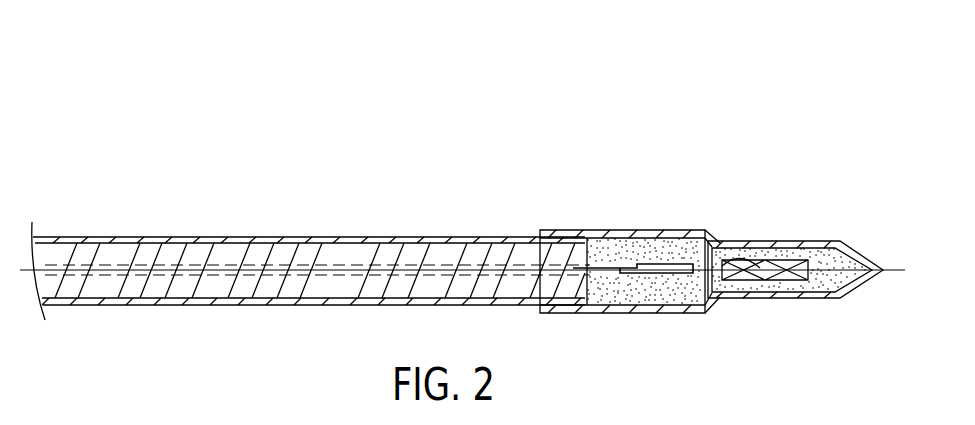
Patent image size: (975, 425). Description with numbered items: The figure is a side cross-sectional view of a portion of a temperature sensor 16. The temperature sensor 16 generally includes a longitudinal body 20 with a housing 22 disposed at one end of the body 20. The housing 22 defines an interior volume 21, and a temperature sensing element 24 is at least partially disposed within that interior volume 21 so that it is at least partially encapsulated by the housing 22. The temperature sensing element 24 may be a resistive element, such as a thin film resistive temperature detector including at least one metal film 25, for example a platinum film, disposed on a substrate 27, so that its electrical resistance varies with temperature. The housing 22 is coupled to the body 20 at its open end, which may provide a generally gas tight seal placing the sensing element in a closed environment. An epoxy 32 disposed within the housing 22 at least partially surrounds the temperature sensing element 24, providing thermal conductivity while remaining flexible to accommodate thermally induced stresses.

The temperature sensor 16 is at (116, 143).
The longitudinal body 20 is at (184, 237).
The interior volume 21 is at (594, 250).
The housing 22 is at (843, 242).
The temperature sensing element 24 is at (757, 258).
The metal film 25 is at (786, 284).
The substrate 27 is at (708, 272).
The epoxy 32 is at (833, 283).